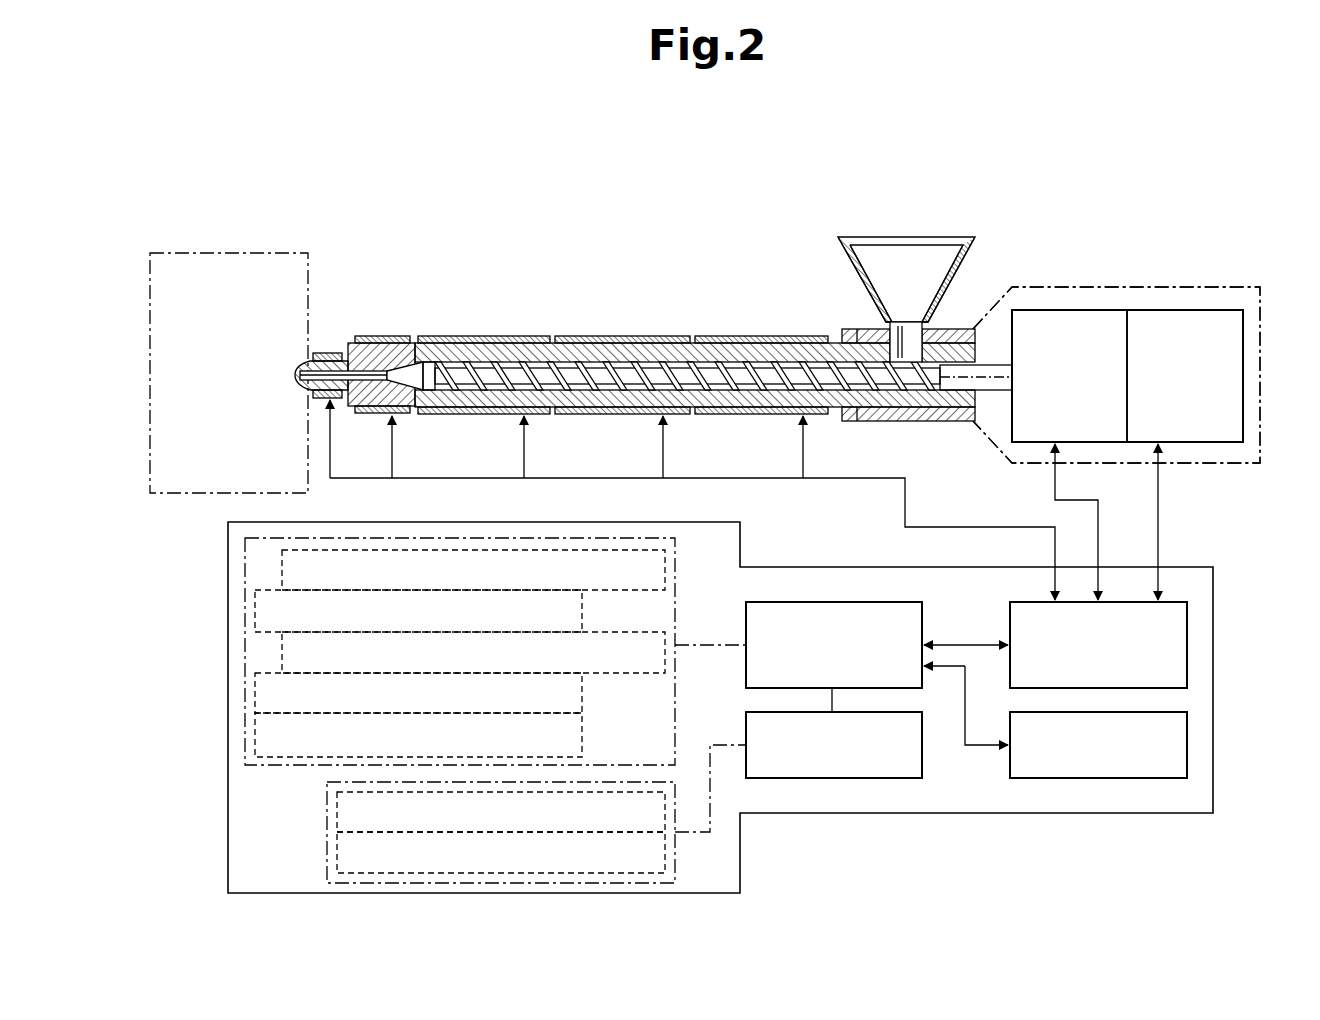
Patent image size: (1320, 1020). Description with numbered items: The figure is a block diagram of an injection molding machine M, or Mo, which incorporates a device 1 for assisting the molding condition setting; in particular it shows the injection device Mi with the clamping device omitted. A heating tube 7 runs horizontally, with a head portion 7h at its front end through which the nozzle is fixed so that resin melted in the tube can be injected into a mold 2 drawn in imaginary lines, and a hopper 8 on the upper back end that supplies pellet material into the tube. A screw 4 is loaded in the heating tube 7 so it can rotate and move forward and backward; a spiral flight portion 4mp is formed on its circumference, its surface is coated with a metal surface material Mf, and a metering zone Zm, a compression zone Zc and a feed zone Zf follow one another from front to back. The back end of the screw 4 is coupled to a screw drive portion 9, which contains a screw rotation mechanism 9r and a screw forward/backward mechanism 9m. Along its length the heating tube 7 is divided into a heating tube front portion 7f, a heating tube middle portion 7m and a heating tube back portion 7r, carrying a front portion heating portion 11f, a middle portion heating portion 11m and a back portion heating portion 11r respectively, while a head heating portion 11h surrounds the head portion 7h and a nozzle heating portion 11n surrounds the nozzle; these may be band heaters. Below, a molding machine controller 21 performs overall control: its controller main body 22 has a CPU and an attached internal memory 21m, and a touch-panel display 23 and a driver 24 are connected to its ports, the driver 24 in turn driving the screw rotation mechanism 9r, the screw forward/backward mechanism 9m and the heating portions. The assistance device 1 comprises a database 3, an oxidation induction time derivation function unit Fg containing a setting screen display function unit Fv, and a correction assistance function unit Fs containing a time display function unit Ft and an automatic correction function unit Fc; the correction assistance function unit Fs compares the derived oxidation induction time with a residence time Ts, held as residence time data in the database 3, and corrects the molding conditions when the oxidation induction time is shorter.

The device for assisting the molding condition setting 1 is at (200, 806).
The mold 2 is at (184, 255).
The database 3 is at (337, 814).
The screw 4 is at (717, 371).
The spiral flight portion 4mp is at (773, 390).
The heating tube 7 is at (695, 408).
The heating tube front portion 7f is at (455, 414).
The heating tube middle portion 7m is at (675, 414).
The heating tube back portion 7r is at (814, 419).
The head portion 7h is at (298, 362).
The hopper 8 is at (937, 236).
The screw drive portion 9 is at (1131, 332).
The screw rotation mechanism 9r is at (1045, 309).
The screw forward/backward mechanism 9m is at (1205, 309).
The head heating portion 11h is at (378, 334).
The front portion heating portion 11f is at (447, 334).
The middle portion heating portion 11m is at (560, 334).
The back portion heating portion 11r is at (705, 334).
The nozzle heating portion 11n is at (322, 400).
The molding machine controller 21 is at (1192, 558).
The internal memory 21m is at (858, 779).
The controller main body 22 is at (822, 601).
The display 23 is at (1095, 779).
The driver 24 is at (1188, 650).
The injection device Mi is at (706, 203).
The injection molding machine M is at (1228, 190).
The molding machine Mo is at (1116, 375).
The surface material Mf is at (773, 358).
The metering zone Zm is at (494, 359).
The compression zone Zc is at (638, 360).
The feed zone Zf is at (796, 359).
The oxidation induction time derivation function unit Fg is at (282, 560).
The setting screen display function unit Fv is at (255, 606).
The correction assistance function unit Fs is at (282, 645).
The time display function unit Ft is at (255, 687).
The automatic correction function unit Fc is at (255, 727).
The residence time Ts is at (337, 856).